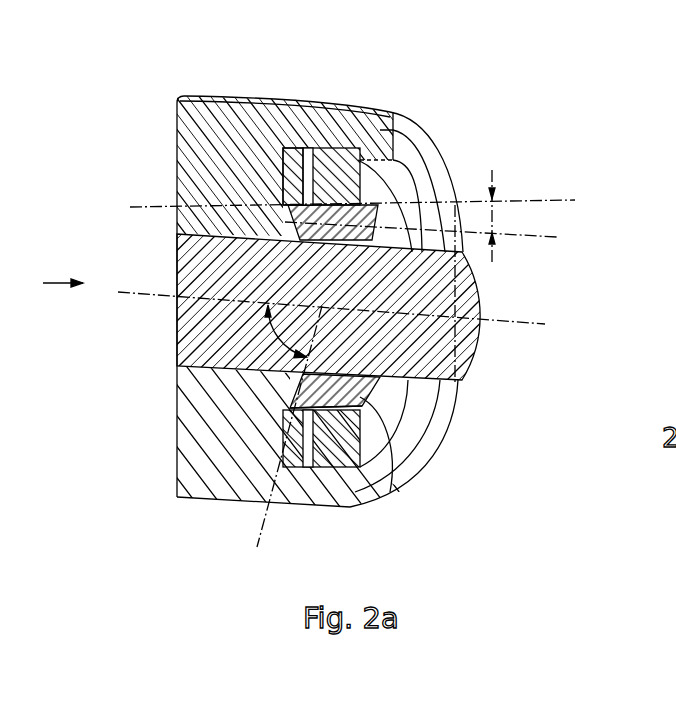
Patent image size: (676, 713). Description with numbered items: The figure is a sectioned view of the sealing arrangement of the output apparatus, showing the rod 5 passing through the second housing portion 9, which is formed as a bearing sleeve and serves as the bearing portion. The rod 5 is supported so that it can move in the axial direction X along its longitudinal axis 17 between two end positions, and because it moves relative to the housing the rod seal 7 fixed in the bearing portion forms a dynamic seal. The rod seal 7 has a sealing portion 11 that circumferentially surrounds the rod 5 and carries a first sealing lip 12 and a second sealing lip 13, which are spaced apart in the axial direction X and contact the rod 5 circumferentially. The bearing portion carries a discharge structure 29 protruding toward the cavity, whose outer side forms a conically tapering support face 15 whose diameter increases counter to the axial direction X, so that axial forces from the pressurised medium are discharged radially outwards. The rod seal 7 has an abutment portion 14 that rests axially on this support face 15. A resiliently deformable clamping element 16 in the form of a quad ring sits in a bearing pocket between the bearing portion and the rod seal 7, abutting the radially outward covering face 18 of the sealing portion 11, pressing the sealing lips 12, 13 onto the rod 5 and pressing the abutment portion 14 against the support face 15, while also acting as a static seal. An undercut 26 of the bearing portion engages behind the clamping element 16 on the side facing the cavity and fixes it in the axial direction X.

The rod seal 7 is at (273, 137).
The discharge structure 29 is at (270, 405).
The second housing portion 9 is at (452, 133).
The undercut 26 is at (360, 153).
The rod 5 is at (420, 350).
The sealing portion 11 is at (345, 235).
The first sealing lip 12 is at (313, 375).
The second sealing lip 13 is at (335, 410).
The clamping element 16 is at (333, 162).
The covering face 18 is at (323, 197).
The abutment portion 14 is at (297, 170).
The support face 15 is at (360, 460).
The longitudinal axis 17 is at (500, 320).
The axial direction X is at (75, 283).